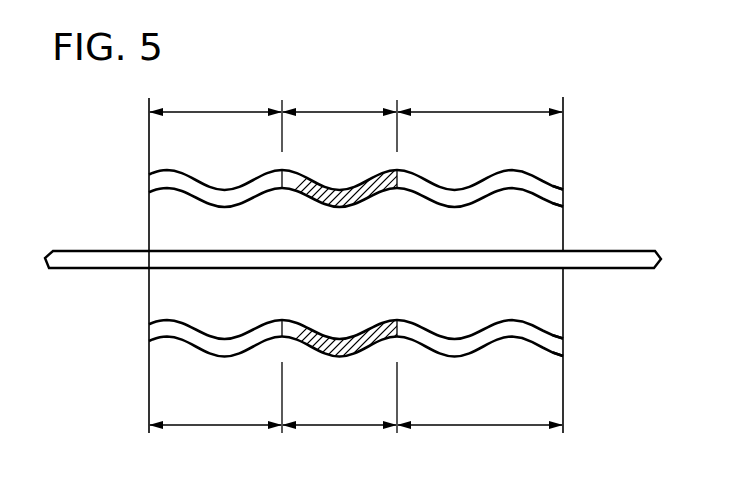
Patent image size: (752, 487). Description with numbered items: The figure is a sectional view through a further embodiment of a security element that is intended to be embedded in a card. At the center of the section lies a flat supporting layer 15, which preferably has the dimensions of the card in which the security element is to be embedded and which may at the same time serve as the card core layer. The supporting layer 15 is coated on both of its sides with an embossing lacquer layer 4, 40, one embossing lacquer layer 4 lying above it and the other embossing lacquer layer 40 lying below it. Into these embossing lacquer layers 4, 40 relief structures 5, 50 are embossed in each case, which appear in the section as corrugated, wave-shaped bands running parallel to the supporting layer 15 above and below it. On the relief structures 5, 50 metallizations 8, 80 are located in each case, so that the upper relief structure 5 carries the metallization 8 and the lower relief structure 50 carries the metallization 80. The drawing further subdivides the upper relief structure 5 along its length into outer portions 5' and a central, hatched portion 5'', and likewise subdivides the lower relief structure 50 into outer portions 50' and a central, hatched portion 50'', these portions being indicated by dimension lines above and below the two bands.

The relief structure 5 is at (335, 197).
The outer section of first spring element 5' is at (356, 98).
The central section of first spring element 5'' is at (339, 98).
The metallization 8 is at (557, 191).
The embossing lacquer layer 4 is at (556, 236).
The supporting layer 15 is at (636, 258).
The embossing lacquer layer 40 is at (556, 302).
The relief structure 50 is at (324, 333).
The outer section of second spring element 50' is at (356, 410).
The central section of second spring element 50'' is at (339, 410).
The metallization 80 is at (556, 346).